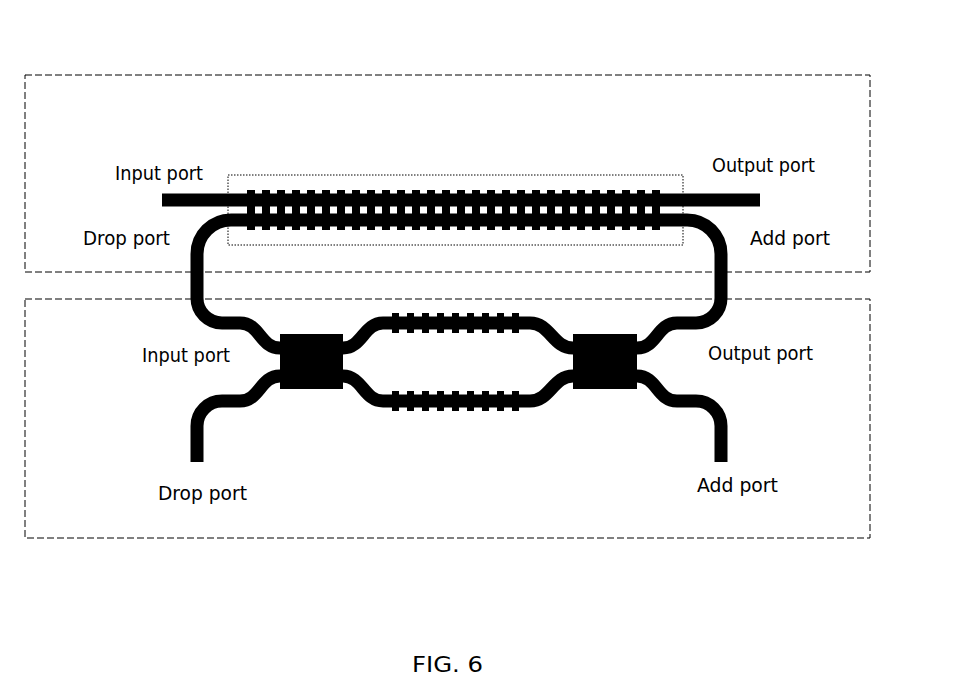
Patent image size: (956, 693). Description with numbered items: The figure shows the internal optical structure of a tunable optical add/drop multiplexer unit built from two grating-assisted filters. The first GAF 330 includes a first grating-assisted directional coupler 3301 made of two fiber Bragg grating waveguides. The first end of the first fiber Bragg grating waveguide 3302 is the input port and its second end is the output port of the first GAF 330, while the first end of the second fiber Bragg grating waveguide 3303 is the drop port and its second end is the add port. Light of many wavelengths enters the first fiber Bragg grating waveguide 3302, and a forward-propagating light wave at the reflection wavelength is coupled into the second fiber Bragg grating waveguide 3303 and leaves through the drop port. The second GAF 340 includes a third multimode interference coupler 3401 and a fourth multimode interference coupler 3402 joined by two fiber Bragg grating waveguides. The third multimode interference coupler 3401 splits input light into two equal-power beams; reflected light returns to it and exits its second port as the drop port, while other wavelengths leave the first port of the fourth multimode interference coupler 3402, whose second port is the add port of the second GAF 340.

The first GAF 330 is at (480, 75).
The first grating-assisted directional coupler 3301 is at (363, 175).
The first fiber Bragg grating waveguide 3302 is at (488, 195).
The second fiber Bragg grating waveguide 3303 is at (580, 212).
The second GAF 340 is at (475, 540).
The third multimode interference coupler 3401 is at (322, 390).
The fourth multimode interference coupler 3402 is at (615, 390).